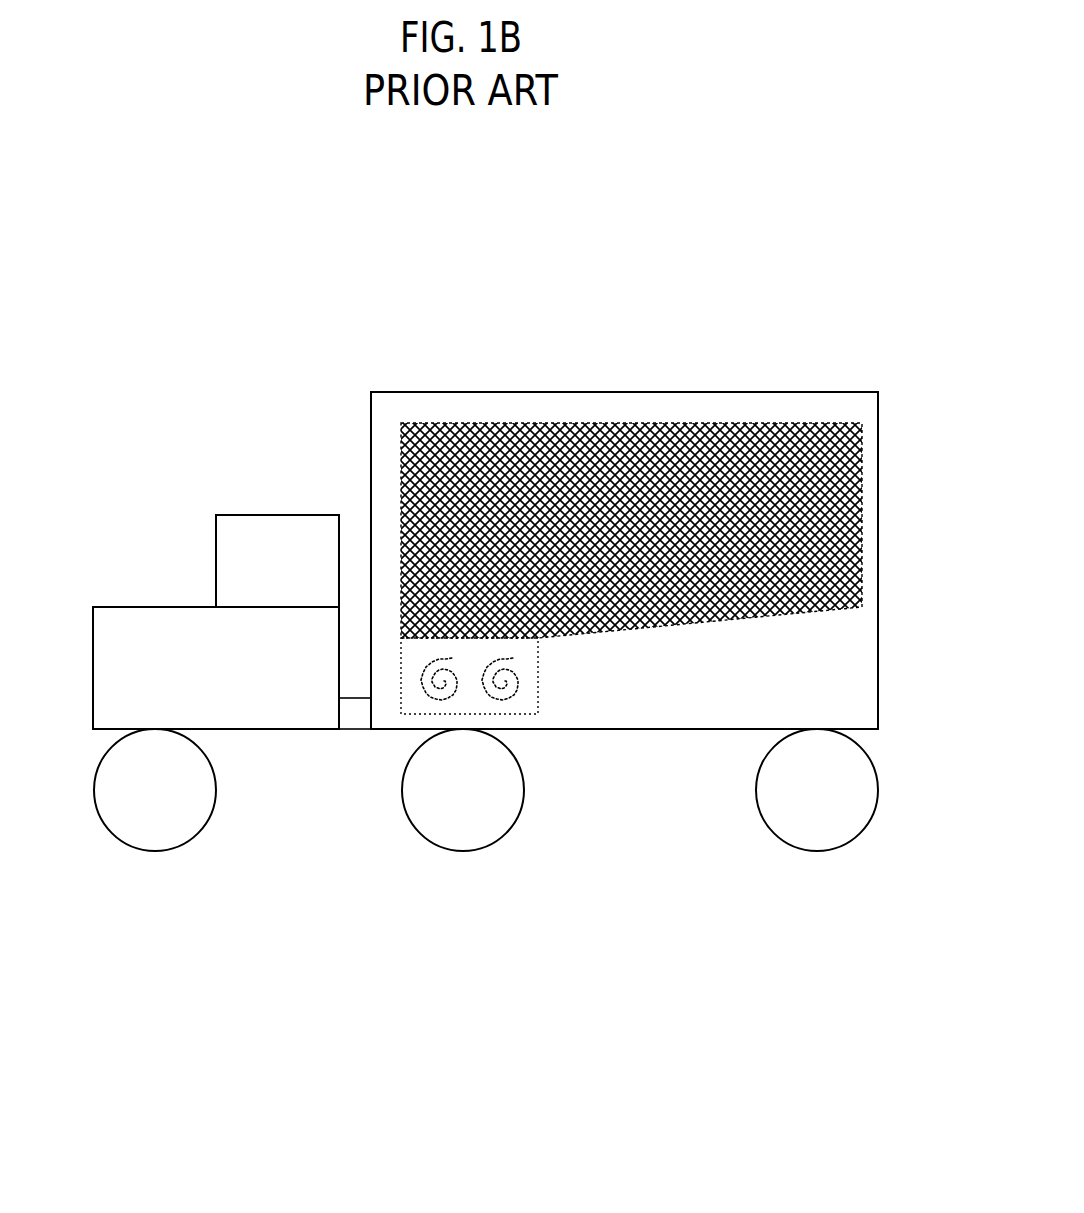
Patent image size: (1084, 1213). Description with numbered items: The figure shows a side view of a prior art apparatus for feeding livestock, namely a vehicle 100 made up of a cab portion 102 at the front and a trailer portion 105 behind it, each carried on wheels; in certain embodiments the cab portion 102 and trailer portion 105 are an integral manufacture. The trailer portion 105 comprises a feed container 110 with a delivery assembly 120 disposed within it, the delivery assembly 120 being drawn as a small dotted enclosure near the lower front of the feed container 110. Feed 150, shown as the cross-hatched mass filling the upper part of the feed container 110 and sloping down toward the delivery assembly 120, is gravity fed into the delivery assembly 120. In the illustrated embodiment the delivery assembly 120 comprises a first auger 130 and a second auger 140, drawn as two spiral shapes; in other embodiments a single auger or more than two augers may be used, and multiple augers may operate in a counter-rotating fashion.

The vehicle 100 is at (533, 952).
The cab portion 102 is at (285, 740).
The trailer portion 105 is at (713, 742).
The feed container 110 is at (866, 520).
The delivery assembly 120 is at (562, 716).
The first auger 130 is at (427, 667).
The second auger 140 is at (521, 678).
The feed 150 is at (694, 432).